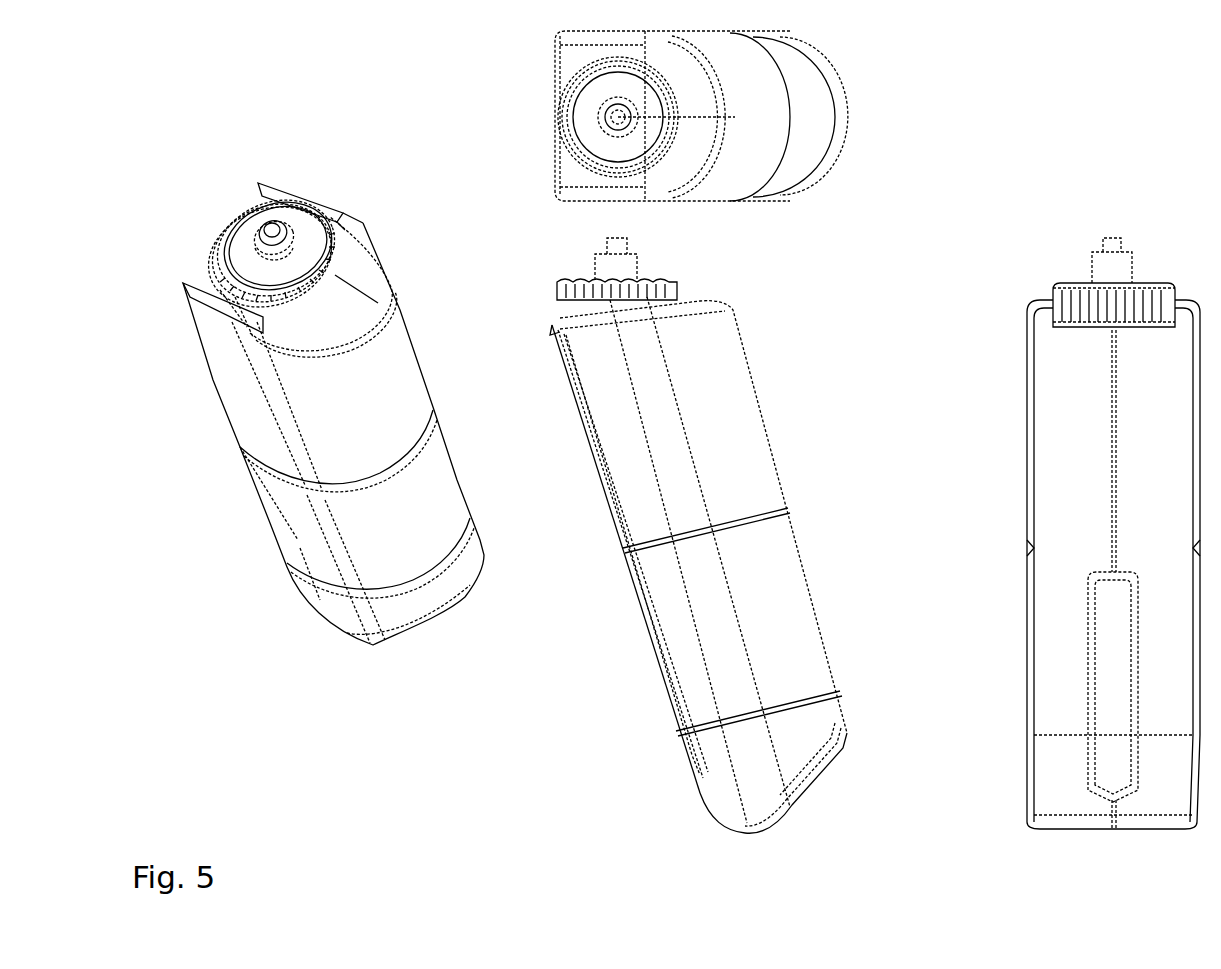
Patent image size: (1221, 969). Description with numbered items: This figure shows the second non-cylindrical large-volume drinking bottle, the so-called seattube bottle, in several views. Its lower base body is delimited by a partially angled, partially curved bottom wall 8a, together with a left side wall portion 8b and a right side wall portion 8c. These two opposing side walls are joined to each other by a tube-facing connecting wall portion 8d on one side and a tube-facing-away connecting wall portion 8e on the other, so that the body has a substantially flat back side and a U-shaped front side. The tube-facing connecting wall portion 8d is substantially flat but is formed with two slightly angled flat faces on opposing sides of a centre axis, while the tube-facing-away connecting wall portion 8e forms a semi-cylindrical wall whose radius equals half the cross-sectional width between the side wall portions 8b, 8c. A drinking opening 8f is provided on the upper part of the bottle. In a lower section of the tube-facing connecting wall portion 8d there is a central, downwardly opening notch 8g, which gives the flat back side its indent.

The bottom wall 8a is at (813, 780).
The left side wall portion 8b is at (1028, 615).
The right side wall portion 8c is at (298, 540).
The tube-facing connecting wall portion 8d is at (640, 640).
The tube-facing-away connecting wall portion 8e is at (398, 563).
The drinking opening 8f is at (243, 203).
The notch 8g is at (1122, 786).